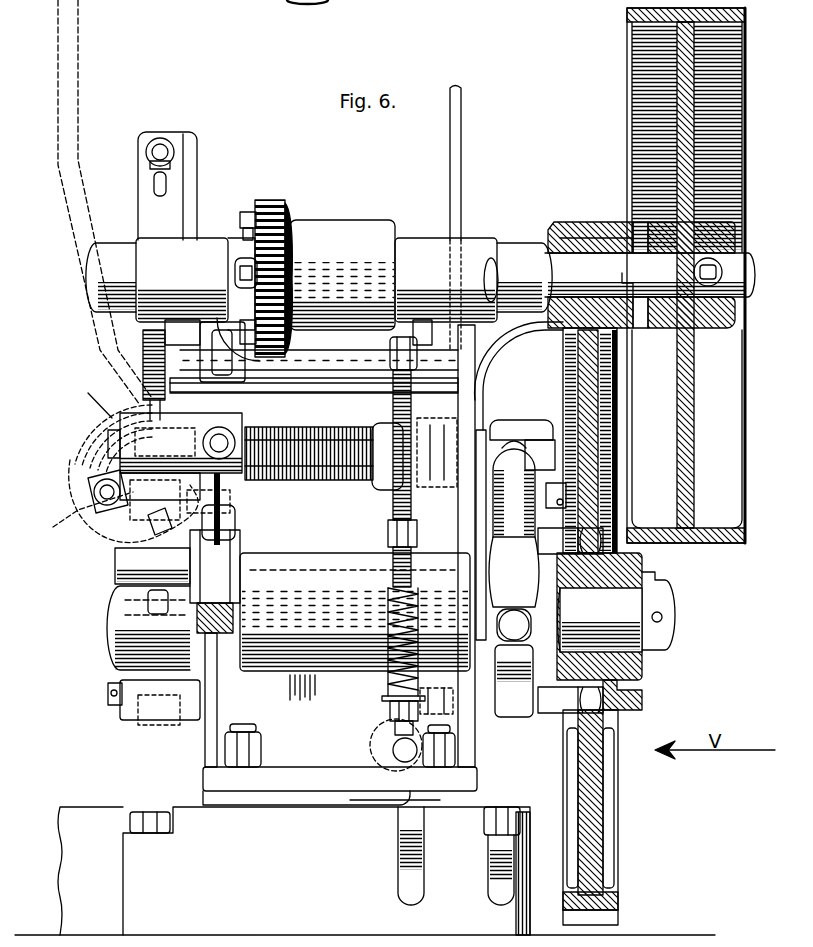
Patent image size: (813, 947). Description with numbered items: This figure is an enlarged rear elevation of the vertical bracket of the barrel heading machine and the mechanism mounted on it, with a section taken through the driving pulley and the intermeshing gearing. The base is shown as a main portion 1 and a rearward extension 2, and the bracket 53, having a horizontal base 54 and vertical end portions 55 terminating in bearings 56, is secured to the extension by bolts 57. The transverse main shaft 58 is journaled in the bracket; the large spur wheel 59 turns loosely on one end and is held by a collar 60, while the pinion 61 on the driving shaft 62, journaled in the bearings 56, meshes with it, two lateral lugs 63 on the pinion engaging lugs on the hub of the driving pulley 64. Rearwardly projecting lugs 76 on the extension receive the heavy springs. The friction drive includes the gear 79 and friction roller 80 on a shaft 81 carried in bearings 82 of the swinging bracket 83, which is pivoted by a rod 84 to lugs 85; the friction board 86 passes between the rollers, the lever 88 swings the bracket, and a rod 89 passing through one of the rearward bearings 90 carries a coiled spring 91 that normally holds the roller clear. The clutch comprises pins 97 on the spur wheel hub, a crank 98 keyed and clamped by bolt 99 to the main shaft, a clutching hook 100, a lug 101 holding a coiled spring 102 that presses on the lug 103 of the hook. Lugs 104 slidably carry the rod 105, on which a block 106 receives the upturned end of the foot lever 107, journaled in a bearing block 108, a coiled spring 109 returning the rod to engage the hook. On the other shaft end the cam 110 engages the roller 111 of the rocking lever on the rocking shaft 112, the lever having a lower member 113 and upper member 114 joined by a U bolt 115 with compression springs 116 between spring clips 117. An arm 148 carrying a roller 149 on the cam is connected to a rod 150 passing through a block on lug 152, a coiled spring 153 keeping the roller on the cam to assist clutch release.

The main portion of the base 1 is at (90, 871).
The rearward extension of the base 2 is at (326, 871).
The bracket 53 is at (302, 693).
The horizontal base of the bracket 54 is at (340, 786).
The vertical end portions of the bracket 55 is at (478, 392).
The bearings 56 is at (319, 276).
The bolts 57 is at (340, 727).
The main shaft 58 is at (599, 519).
The spur wheel 59 is at (603, 814).
The collar 60 is at (663, 605).
The pinion 61 is at (578, 222).
The driving shaft 62 is at (650, 275).
The lateral lugs 63 is at (640, 228).
The driving pulley 64 is at (686, 275).
The rearwardly projecting lugs 76 is at (464, 871).
The gear 79 is at (270, 208).
The friction roller 80 is at (342, 275).
The shaft 81 is at (494, 262).
The bearings 82 is at (316, 278).
The swinging bracket 83 is at (312, 390).
The rod 84 is at (312, 368).
The lugs 85 is at (392, 350).
The friction board 86 is at (219, 352).
The lever 88 is at (462, 172).
The rod 89 is at (393, 503).
The rearwardly projecting bearings 90 is at (285, 553).
The coiled spring 91 is at (395, 624).
The pins 97 is at (570, 620).
The crank 98 is at (514, 572).
The clamping bolt 99 is at (514, 663).
The clutching hook 100 is at (548, 492).
The lug 101 is at (510, 493).
The coiled spring 102 is at (520, 438).
The lug 103 is at (531, 454).
The lugs 104 is at (445, 426).
The rod 105 is at (482, 440).
The block 106 is at (375, 440).
The foot lever 107 is at (388, 523).
The bearing block 108 is at (372, 741).
The coiled spring 109 is at (312, 481).
The cam 110 is at (112, 656).
The roller 111 is at (160, 726).
The rocking shaft 112 is at (152, 566).
The lower member of the rocking lever 113 is at (130, 538).
The upper member of the rocking lever 114 is at (85, 202).
The U bolt 115 is at (95, 495).
The coiled compression springs 116 is at (60, 434).
The spring clips 117 is at (77, 459).
The arm 148 is at (128, 432).
The roller 149 is at (180, 509).
The rod 150 is at (139, 363).
The lug 152 is at (167, 186).
The coiled spring 153 is at (150, 398).